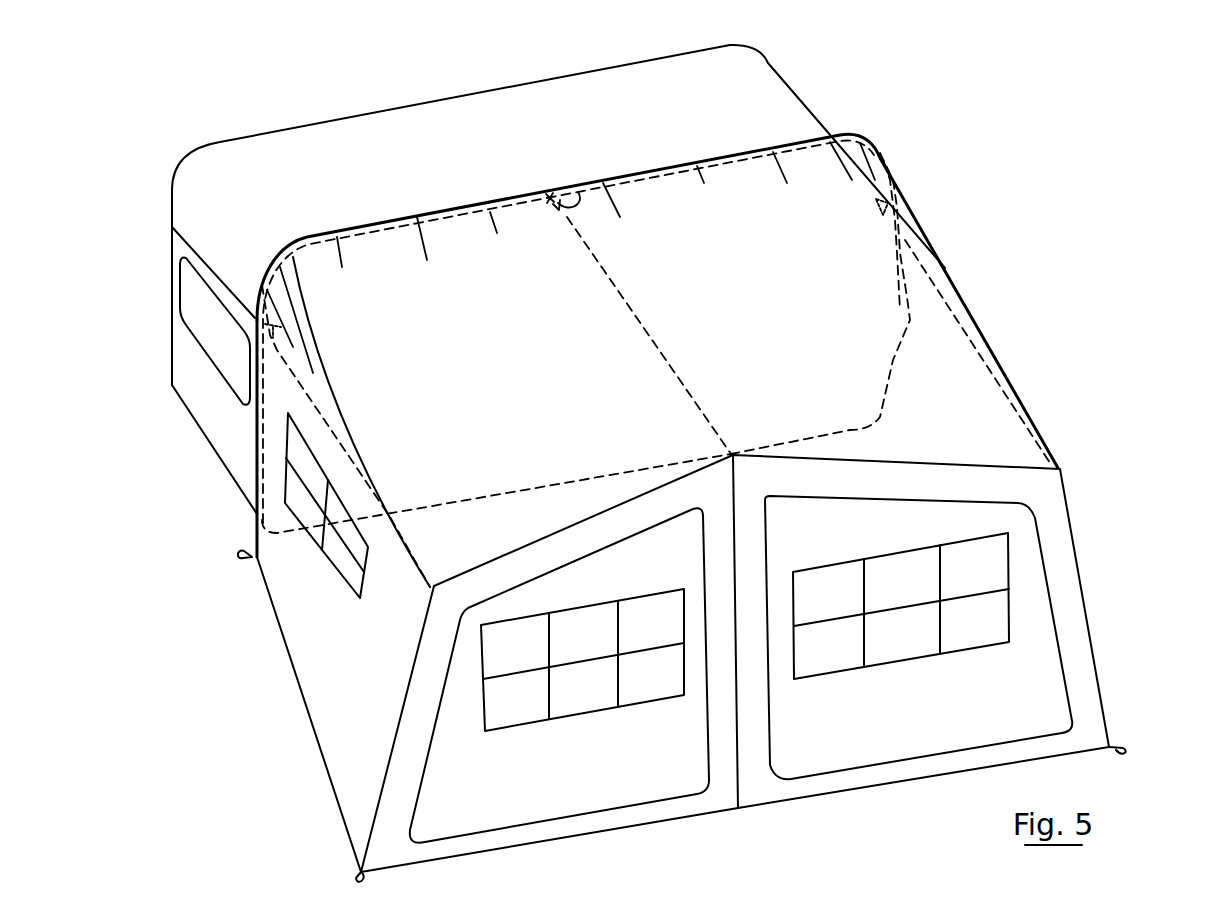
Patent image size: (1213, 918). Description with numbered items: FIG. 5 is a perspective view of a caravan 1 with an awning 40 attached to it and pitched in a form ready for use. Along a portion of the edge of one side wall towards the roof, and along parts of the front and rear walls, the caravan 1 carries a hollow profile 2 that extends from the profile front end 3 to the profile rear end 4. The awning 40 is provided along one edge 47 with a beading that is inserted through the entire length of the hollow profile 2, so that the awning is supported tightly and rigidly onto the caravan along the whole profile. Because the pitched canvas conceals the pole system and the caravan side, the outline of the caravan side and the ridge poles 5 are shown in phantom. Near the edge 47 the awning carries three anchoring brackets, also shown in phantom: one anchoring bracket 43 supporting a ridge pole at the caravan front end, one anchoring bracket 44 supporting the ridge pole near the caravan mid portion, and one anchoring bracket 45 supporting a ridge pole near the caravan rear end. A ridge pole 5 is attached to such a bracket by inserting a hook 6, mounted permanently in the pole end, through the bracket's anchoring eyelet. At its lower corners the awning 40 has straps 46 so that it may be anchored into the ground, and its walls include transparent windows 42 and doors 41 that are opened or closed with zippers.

The caravan 1 is at (862, 95).
The hollow profile 2 is at (710, 153).
The profile front end 3 is at (905, 310).
The profile rear end 4 is at (257, 435).
The ridge pole 5 is at (322, 420).
The hook 6 is at (270, 336).
The awning 40 is at (288, 674).
The doors 41 is at (569, 775).
The transparent windows 42 is at (303, 517).
The anchoring bracket 43 is at (879, 211).
The anchoring bracket 44 is at (578, 192).
The anchoring bracket 45 is at (273, 330).
The straps 46 is at (243, 555).
The edge 47 is at (413, 217).